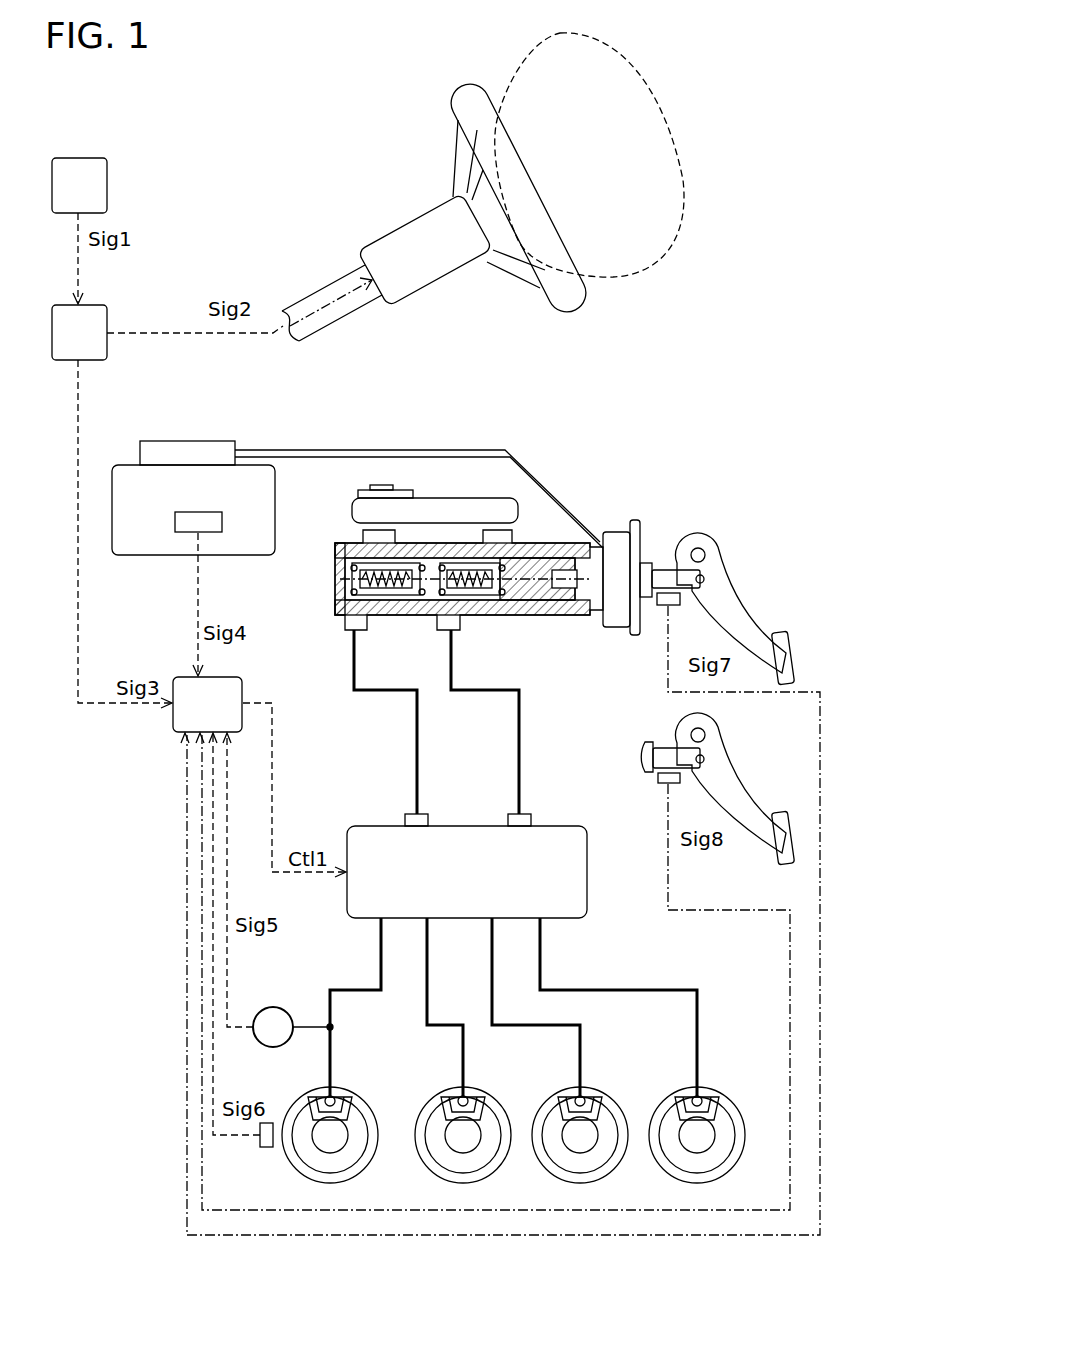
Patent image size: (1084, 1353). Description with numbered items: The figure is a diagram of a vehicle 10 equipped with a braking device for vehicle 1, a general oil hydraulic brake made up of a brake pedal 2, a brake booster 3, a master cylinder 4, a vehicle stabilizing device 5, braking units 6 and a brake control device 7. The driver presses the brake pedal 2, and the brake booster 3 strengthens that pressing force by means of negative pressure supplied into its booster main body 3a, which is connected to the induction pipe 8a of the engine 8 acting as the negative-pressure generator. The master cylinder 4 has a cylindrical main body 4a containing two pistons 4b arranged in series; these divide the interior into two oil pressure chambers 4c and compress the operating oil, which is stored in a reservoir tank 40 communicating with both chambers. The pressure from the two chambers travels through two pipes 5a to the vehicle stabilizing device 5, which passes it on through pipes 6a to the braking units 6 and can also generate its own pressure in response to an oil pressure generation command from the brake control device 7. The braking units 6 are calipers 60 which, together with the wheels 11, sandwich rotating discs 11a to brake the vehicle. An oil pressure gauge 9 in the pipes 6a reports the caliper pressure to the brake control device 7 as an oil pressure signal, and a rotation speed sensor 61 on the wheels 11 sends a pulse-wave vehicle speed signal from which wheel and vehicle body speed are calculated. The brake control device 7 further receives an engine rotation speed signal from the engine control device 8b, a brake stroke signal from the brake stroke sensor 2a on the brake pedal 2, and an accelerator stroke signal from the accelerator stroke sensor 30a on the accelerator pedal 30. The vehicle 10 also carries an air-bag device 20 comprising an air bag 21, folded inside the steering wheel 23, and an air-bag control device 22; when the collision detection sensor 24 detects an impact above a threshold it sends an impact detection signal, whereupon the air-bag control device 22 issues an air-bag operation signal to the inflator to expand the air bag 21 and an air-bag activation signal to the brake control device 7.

The braking device for vehicle 1 is at (565, 448).
The brake pedal 2 is at (735, 572).
The brake stroke sensor 2a is at (665, 607).
The brake booster 3 is at (645, 526).
The booster main body 3a is at (620, 630).
The master cylinder 4 is at (442, 564).
The main body 4a is at (545, 615).
The pistons 4b is at (390, 605).
The oil pressure chambers 4c is at (345, 575).
The vehicle stabilizing device 5 is at (552, 826).
The pipes 5a is at (358, 690).
The braking units 6 is at (334, 1095).
The pipes 6a is at (334, 1012).
The brake control device 7 is at (243, 690).
The engine 8 is at (276, 488).
The induction pipe 8a is at (196, 441).
The engine control device 8b is at (223, 522).
The oil pressure gauge 9 is at (273, 1048).
The vehicle 10 is at (722, 156).
The wheels 11 is at (376, 1116).
The discs 11a is at (362, 1160).
The air-bag device 20 is at (300, 135).
The air bag 21 is at (625, 78).
The air-bag control device 22 is at (108, 312).
The steering wheel 23 is at (432, 279).
The collision detection sensor 24 is at (108, 186).
The accelerator pedal 30 is at (735, 753).
The accelerator stroke sensor 30a is at (663, 786).
The reservoir tank 40 is at (440, 498).
The calipers 60 is at (346, 1103).
The rotation speed sensor 61 is at (266, 1148).